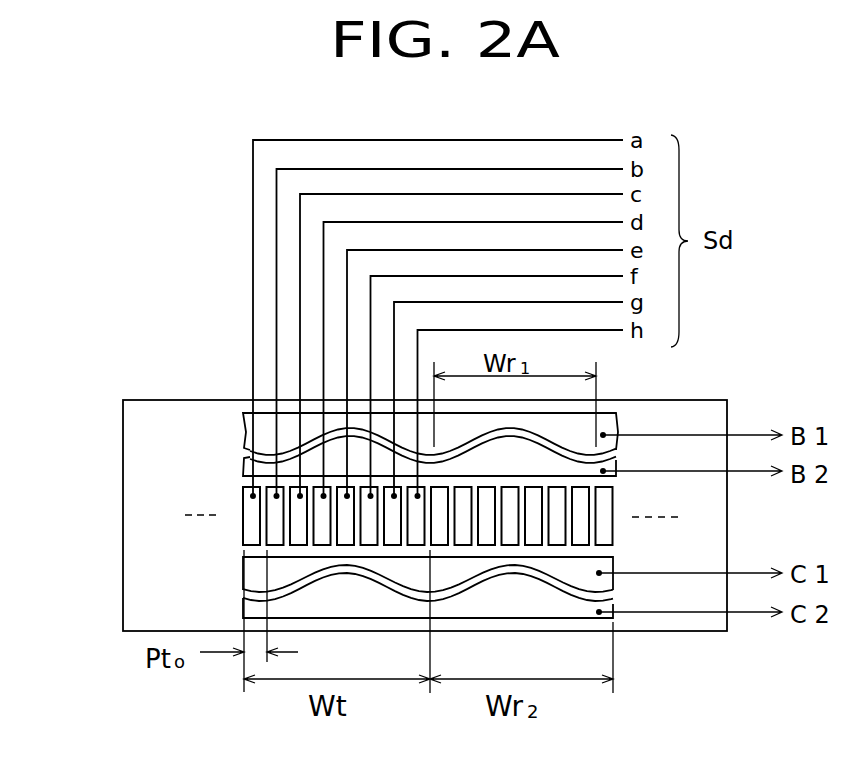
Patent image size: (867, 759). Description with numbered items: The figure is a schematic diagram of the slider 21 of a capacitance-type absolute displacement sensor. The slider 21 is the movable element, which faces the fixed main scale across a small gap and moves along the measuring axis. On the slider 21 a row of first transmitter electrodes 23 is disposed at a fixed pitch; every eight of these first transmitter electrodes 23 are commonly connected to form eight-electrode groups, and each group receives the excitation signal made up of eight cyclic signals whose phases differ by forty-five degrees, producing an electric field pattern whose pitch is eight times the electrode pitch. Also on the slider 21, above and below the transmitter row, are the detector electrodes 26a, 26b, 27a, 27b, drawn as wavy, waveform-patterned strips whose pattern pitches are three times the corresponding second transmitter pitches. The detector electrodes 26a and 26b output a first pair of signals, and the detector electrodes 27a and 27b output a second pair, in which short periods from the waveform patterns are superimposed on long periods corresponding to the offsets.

The slider 21 is at (108, 419).
The first transmitter electrodes 23 is at (243, 518).
The detector electrode 26a is at (244, 446).
The detector electrode 26b is at (243, 467).
The detector electrode 27a is at (243, 575).
The detector electrode 27b is at (243, 615).